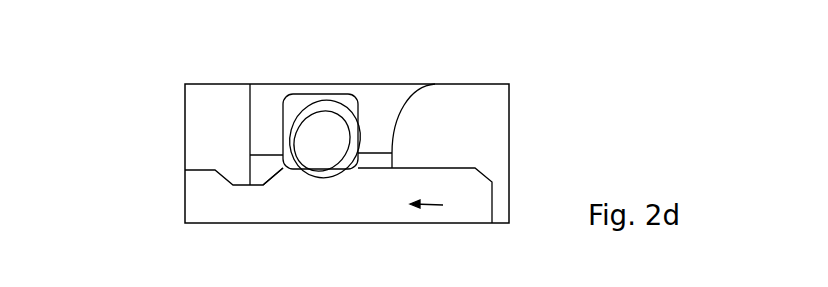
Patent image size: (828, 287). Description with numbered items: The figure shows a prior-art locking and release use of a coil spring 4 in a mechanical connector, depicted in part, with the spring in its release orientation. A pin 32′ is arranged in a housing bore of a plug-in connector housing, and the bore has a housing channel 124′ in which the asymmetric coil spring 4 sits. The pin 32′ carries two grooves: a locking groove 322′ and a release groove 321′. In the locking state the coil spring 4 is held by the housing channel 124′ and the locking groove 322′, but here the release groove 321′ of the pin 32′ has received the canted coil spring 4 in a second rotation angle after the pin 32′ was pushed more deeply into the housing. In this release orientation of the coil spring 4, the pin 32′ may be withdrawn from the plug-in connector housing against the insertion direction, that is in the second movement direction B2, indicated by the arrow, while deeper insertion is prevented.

The pin 32′ is at (185, 186).
The release groove 321′ is at (250, 242).
The locking groove 322′ is at (309, 177).
The housing channel 124′ is at (308, 106).
The coil spring 4 is at (354, 100).
The second movement direction B2 is at (430, 210).